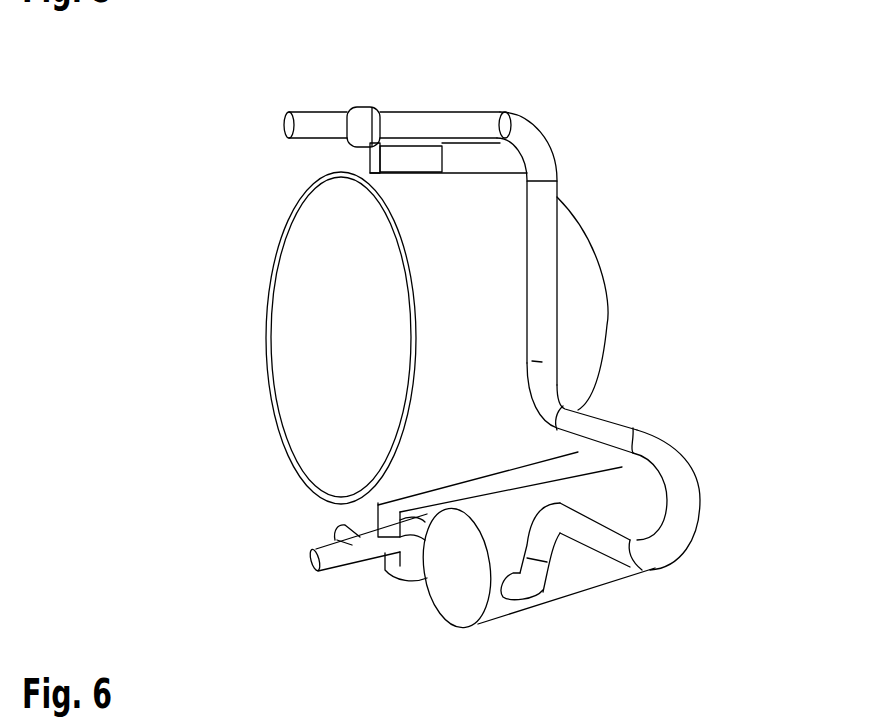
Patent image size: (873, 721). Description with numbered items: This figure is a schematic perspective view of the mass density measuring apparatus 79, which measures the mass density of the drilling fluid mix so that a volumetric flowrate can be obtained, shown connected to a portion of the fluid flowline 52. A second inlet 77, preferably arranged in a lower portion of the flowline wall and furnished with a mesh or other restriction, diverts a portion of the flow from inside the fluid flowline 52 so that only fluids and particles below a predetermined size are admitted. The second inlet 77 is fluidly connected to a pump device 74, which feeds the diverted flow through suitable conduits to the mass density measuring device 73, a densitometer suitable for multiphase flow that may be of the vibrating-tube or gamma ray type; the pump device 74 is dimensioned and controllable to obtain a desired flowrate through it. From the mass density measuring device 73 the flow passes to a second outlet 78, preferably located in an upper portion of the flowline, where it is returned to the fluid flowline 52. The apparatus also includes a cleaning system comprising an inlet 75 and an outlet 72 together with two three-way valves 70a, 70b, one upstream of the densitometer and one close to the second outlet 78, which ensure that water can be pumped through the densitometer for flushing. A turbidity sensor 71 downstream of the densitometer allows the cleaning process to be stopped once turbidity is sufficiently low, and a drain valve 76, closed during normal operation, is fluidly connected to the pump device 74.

The fluid flowline 52 is at (613, 296).
The three-way valve 70a is at (391, 525).
The three-way valve 70b is at (420, 106).
The turbidity sensor 71 is at (384, 92).
The outlet 72 is at (275, 115).
The mass density measuring device 73 is at (687, 441).
The pump device 74 is at (439, 605).
The inlet 75 is at (298, 556).
The drain valve 76 is at (384, 572).
The second inlet 77 is at (367, 480).
The second outlet 78 is at (354, 163).
The mass density measuring apparatus 79 is at (638, 168).